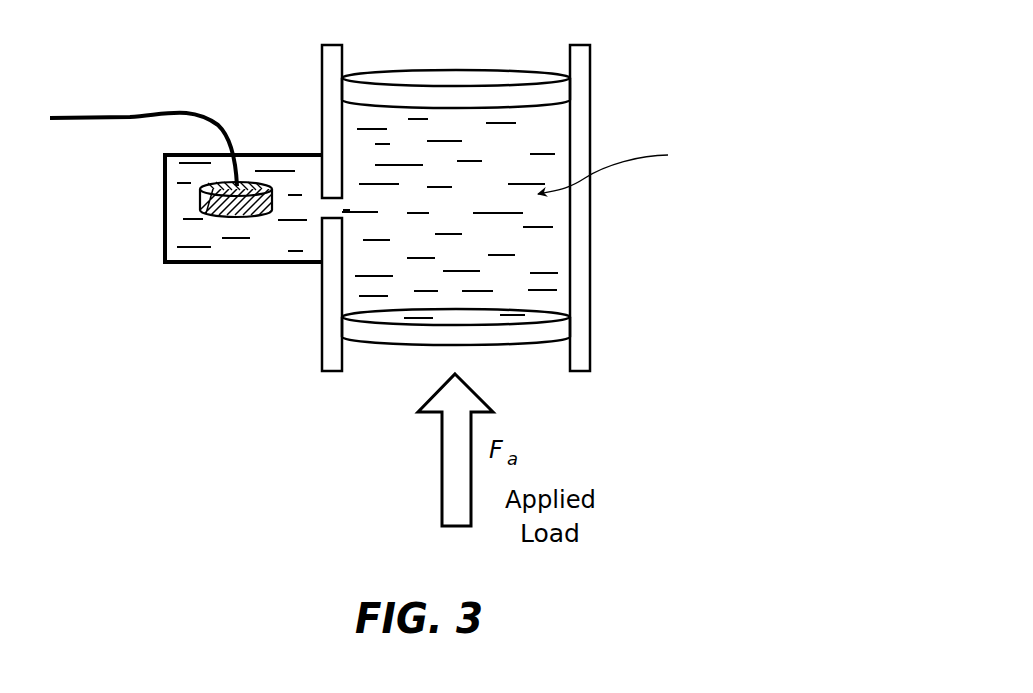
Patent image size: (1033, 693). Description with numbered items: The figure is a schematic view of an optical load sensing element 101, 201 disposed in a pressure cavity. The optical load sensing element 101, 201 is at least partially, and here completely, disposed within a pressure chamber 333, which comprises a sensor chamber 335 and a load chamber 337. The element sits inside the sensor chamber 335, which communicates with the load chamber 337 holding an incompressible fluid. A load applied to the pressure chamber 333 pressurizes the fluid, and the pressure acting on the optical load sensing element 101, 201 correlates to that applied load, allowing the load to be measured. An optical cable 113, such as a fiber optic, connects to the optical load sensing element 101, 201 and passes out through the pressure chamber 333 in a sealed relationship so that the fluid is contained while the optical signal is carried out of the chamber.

The optical cable 113 is at (153, 100).
The optical load sensing element 101 is at (149, 210).
The optical load sensing element 201 is at (196, 200).
The sensor chamber 335 is at (172, 266).
The pressure chamber 333 is at (605, 262).
The load chamber 337 is at (582, 121).